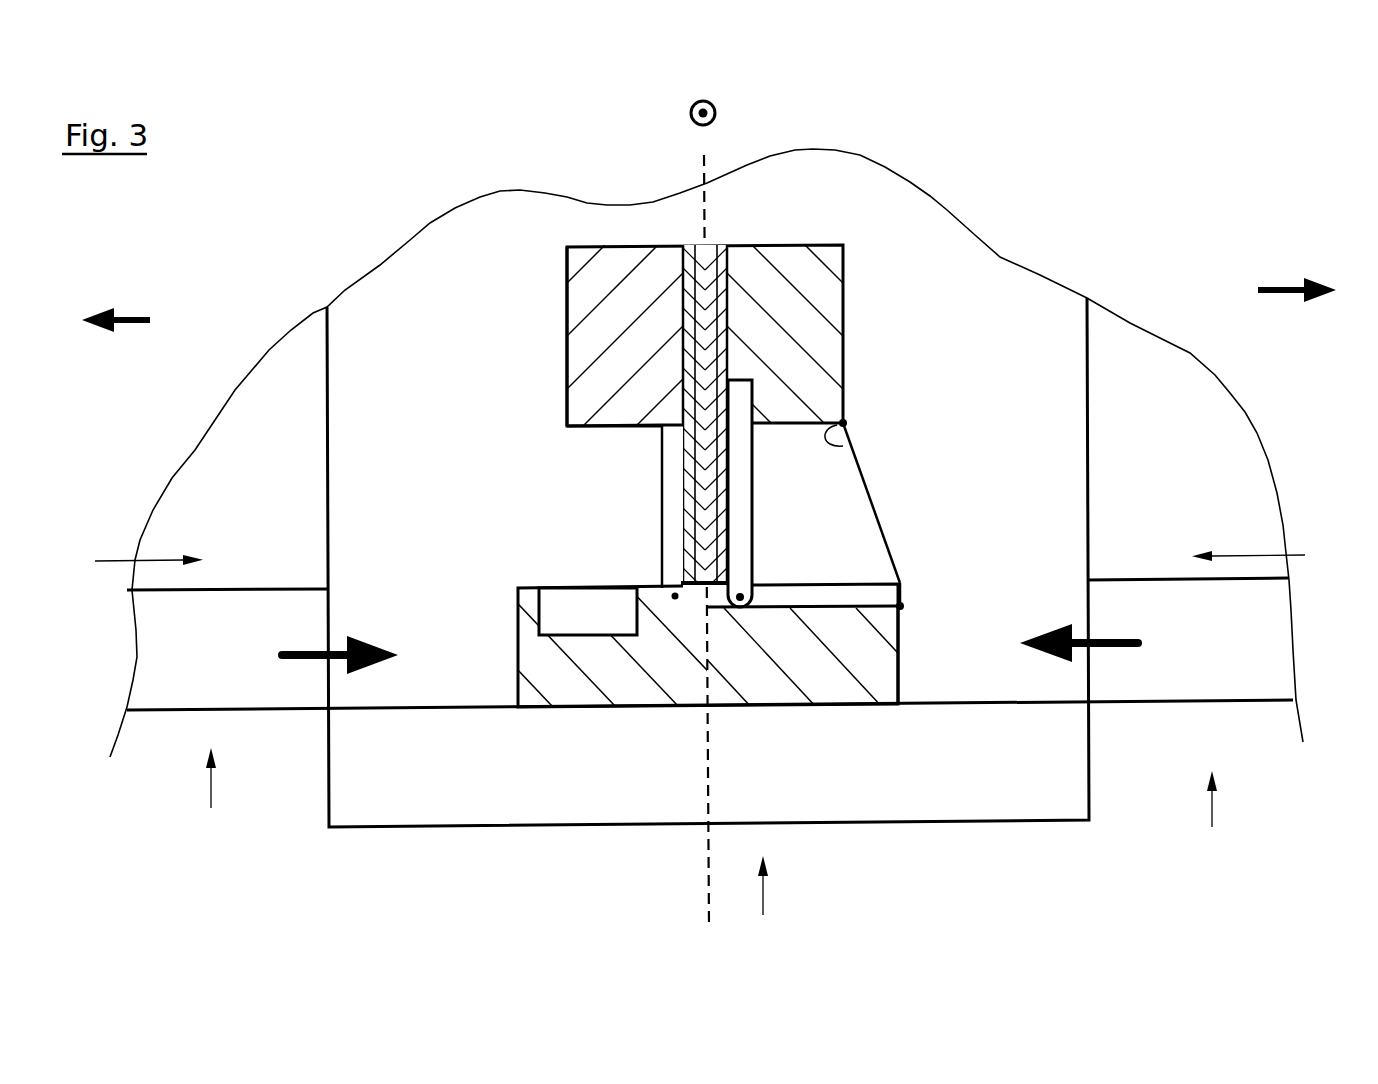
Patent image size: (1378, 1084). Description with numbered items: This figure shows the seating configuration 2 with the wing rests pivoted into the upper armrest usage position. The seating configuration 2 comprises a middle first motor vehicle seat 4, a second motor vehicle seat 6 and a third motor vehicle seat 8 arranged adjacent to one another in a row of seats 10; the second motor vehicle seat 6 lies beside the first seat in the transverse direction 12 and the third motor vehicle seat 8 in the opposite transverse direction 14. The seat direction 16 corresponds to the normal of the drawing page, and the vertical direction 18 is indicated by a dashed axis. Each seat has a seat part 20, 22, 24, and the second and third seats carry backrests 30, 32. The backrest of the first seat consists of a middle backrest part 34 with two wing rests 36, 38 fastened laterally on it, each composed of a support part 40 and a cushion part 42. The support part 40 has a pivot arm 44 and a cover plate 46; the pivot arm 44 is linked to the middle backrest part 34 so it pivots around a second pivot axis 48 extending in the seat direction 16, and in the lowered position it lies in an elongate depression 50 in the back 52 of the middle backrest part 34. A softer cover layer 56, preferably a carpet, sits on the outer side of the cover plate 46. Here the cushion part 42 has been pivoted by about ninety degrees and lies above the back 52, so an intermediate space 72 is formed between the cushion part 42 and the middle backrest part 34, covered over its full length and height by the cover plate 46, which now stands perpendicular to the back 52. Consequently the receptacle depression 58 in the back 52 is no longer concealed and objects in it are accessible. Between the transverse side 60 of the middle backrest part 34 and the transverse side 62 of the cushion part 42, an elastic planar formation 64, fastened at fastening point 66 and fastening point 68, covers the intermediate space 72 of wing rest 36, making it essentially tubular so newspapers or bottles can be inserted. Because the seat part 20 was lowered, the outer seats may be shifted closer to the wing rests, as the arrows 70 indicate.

The seating configuration 2 is at (1252, 180).
The first motor vehicle seat 4 is at (763, 908).
The second motor vehicle seat 6 is at (1212, 824).
The third motor vehicle seat 8 is at (211, 803).
The row of seats 10 is at (1284, 495).
The transverse direction 12 is at (1276, 290).
The opposite transverse direction 14 is at (128, 316).
The seat direction 16 is at (690, 113).
The vertical direction 18 is at (702, 873).
The seat part 20 is at (768, 789).
The seat part 22 is at (1223, 655).
The seat part 24 is at (233, 655).
The backrest 30 is at (1278, 556).
The backrest 32 is at (120, 564).
The middle backrest part 34 is at (765, 680).
The wing rest 36 is at (854, 266).
The wing rest 38 is at (560, 287).
The support part 40 is at (655, 461).
The cushion part 42 is at (643, 290).
The pivot arm 44 is at (673, 500).
The cover plate 46 is at (680, 282).
The second pivot axis 48 is at (675, 595).
The elongate depression 50 is at (853, 593).
The back 52 is at (533, 586).
The cover layer 56 is at (692, 250).
The receptacle depression 58 is at (607, 627).
The transverse side 60 is at (900, 677).
The transverse side 62 is at (851, 447).
The planar formation 64 is at (863, 480).
The fastening point 66 is at (900, 606).
The fastening point 68 is at (845, 422).
The arrows 70 is at (317, 662).
The intermediate space 72 is at (627, 516).